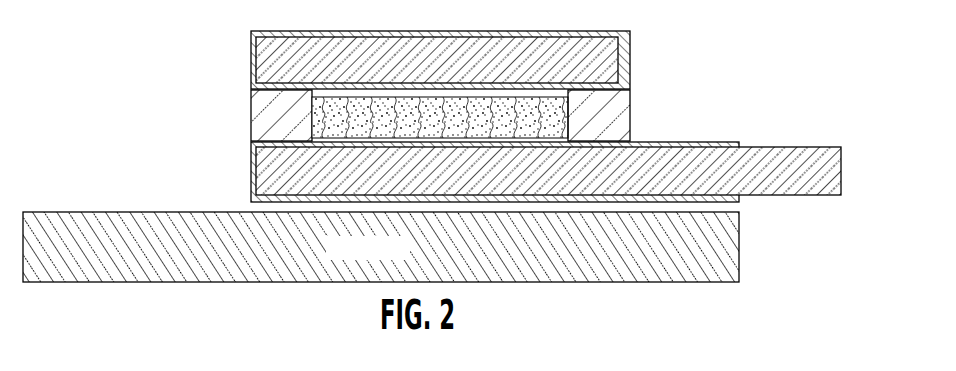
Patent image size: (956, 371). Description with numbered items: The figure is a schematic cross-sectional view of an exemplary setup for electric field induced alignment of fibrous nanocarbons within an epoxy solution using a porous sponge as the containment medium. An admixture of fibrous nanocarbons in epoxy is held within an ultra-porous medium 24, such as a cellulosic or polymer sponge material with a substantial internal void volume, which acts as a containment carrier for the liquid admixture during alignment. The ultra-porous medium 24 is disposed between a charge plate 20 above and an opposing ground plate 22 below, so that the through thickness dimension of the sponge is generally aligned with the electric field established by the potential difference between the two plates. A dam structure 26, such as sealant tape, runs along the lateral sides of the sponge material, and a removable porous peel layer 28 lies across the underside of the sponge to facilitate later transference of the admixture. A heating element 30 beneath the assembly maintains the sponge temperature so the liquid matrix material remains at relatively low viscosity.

The charge plate 20 is at (250, 70).
The ground plate 22 is at (250, 175).
The ultra-porous medium 24 is at (553, 110).
The dam structure 26 is at (250, 118).
The removable porous peel layer 28 is at (572, 130).
The heating element 30 is at (739, 247).